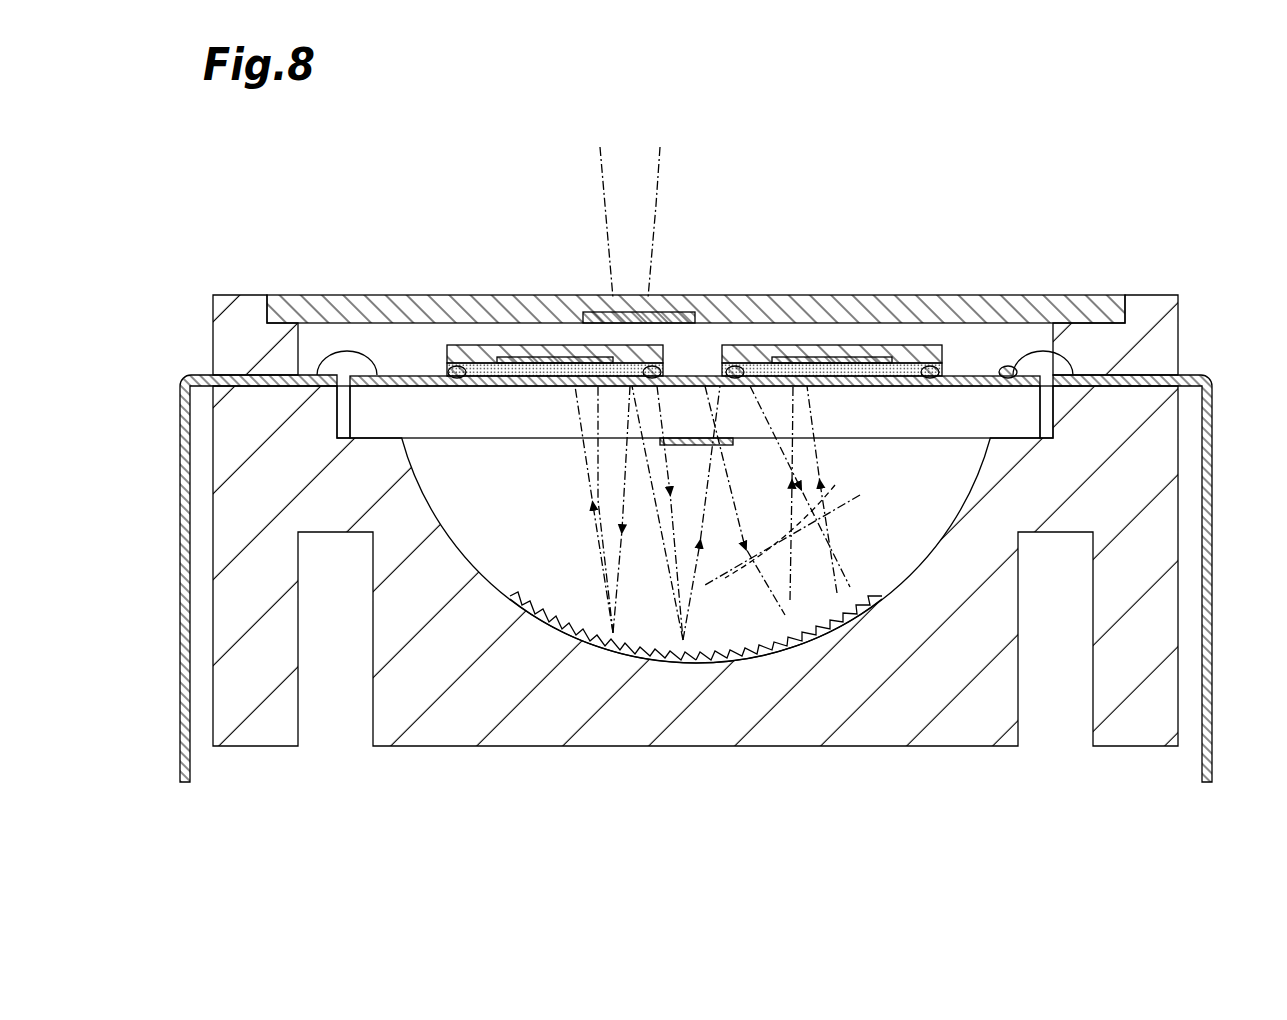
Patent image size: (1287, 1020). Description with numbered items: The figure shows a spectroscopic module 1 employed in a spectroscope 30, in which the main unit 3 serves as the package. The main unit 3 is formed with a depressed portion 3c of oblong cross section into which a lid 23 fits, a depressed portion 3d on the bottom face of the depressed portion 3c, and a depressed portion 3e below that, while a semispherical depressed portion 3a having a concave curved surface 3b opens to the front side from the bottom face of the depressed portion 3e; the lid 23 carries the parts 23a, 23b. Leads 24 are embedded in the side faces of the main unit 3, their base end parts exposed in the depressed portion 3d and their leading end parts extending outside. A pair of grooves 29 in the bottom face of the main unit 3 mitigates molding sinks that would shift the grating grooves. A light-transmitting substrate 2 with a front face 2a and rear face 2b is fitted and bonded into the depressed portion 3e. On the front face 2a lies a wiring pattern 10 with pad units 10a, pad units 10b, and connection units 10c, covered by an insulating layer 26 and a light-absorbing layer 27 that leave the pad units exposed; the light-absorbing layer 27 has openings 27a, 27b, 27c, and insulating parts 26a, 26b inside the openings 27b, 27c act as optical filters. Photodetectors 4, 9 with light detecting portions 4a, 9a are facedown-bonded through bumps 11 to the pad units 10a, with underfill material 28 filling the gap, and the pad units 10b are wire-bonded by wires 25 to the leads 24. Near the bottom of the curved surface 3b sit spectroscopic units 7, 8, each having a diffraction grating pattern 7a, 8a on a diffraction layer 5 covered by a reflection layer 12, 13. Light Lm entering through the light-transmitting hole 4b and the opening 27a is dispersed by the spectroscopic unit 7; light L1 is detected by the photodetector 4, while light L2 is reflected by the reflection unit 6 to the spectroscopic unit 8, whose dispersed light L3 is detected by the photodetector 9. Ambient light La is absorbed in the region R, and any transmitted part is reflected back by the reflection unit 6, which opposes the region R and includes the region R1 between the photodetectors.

The spectroscopic module 1 is at (236, 776).
The light-transmitting substrate 2 is at (1010, 411).
The front face 2a is at (1040, 382).
The substrate lower surface 2b is at (1040, 446).
The main unit 3 is at (1180, 337).
The depressed portion 3a is at (476, 545).
The curved surface 3b is at (910, 545).
The depressed portion 3c is at (281, 295).
The depressed portion 3d is at (304, 342).
The depressed portion 3e is at (343, 416).
The photodetector 4 is at (556, 357).
The light detecting portion 4a is at (537, 345).
The light-transmitting hole 4b is at (637, 345).
The diffraction layer 5 is at (745, 665).
The reflection unit 6 is at (742, 530).
The spectroscopic unit 7 is at (560, 585).
The diffraction grating pattern 7a is at (572, 602).
The spectroscopic unit 8 is at (862, 576).
The diffraction grating pattern 8a is at (817, 620).
The photodetector 9 is at (835, 345).
The light detecting portion 9a is at (875, 357).
The wiring pattern 10 is at (396, 375).
The pad unit 10a is at (966, 375).
The pad unit 10b is at (1015, 375).
The connection unit 10c is at (995, 375).
The bump 11 is at (440, 375).
The reflection layer 12 is at (600, 627).
The reflection layer 13 is at (850, 585).
The lid 23 is at (760, 323).
The opening 23a is at (600, 318).
The opening 23b is at (654, 297).
The lead 24 is at (180, 545).
The wire 25 is at (1052, 356).
The insulating layer 26 is at (325, 370).
The insulating part 26a is at (518, 368).
The insulating part 26b is at (915, 368).
The light-absorbing layer 27 is at (357, 375).
The opening 27a is at (690, 438).
The opening 27b is at (478, 358).
The opening 27c is at (935, 372).
The underfill material 28 is at (578, 371).
The groove 29 is at (302, 697).
The spectroscope 30 is at (1100, 172).
The light Lm is at (603, 183).
The ambient light La is at (670, 393).
The light L1 is at (590, 492).
The light L2 is at (840, 500).
The light L3 is at (830, 482).
The region R is at (741, 513).
The region R1 is at (700, 350).